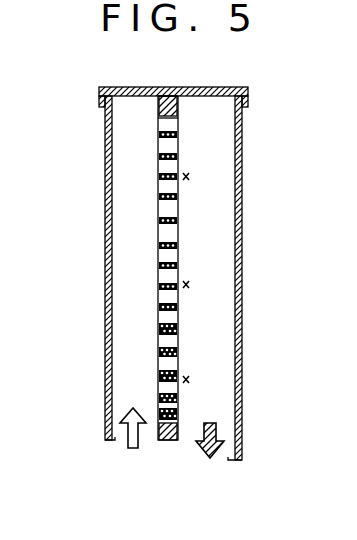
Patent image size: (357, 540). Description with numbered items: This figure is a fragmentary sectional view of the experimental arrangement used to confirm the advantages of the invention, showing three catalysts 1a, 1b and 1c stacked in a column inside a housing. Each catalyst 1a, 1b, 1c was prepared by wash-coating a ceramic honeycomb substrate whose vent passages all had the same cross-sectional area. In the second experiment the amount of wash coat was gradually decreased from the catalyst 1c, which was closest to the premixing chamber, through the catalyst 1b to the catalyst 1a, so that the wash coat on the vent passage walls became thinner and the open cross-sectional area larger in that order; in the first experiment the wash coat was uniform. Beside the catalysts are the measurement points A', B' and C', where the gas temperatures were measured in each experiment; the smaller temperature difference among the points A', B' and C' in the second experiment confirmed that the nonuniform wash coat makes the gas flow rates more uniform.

The catalyst 1a is at (161, 171).
The catalyst 1b is at (161, 279).
The catalyst 1c is at (161, 385).
The temperature measurement point A' is at (203, 170).
The temperature measurement point B' is at (202, 279).
The temperature measurement point C' is at (202, 372).